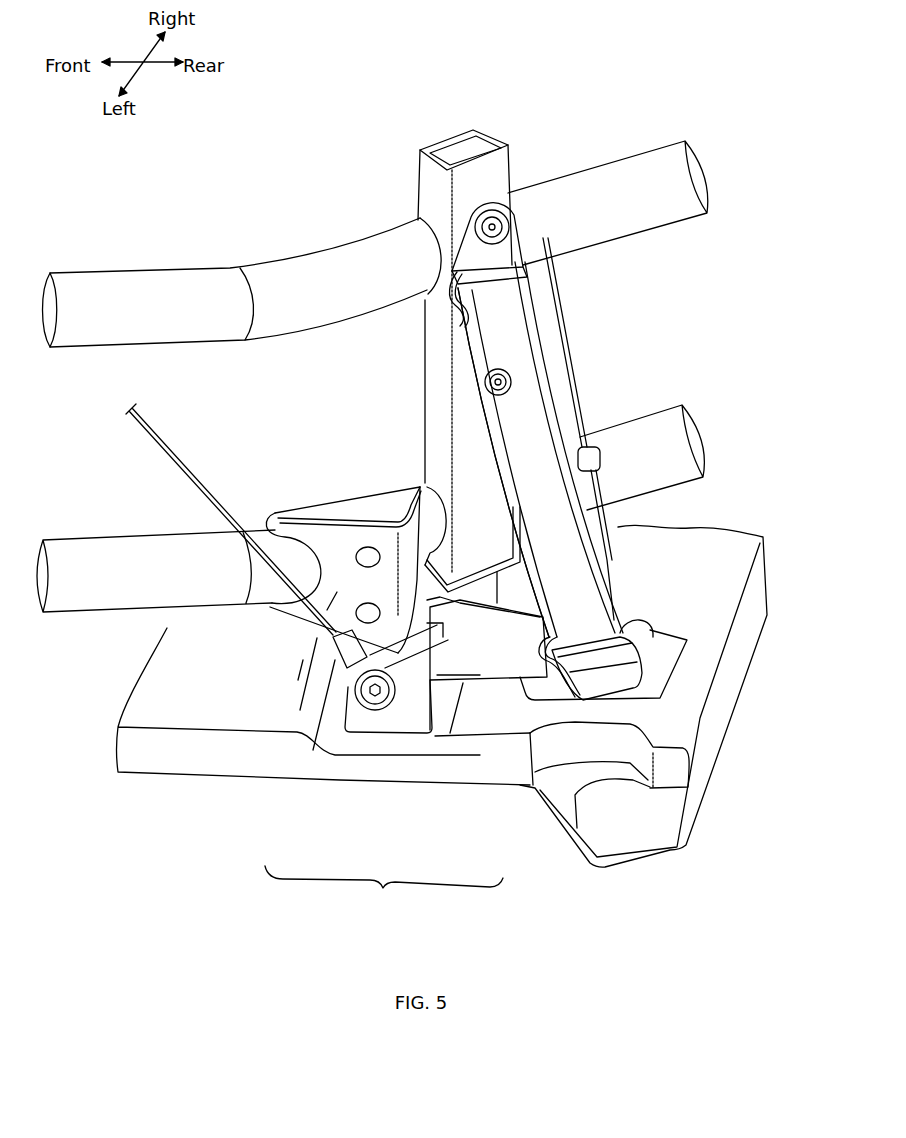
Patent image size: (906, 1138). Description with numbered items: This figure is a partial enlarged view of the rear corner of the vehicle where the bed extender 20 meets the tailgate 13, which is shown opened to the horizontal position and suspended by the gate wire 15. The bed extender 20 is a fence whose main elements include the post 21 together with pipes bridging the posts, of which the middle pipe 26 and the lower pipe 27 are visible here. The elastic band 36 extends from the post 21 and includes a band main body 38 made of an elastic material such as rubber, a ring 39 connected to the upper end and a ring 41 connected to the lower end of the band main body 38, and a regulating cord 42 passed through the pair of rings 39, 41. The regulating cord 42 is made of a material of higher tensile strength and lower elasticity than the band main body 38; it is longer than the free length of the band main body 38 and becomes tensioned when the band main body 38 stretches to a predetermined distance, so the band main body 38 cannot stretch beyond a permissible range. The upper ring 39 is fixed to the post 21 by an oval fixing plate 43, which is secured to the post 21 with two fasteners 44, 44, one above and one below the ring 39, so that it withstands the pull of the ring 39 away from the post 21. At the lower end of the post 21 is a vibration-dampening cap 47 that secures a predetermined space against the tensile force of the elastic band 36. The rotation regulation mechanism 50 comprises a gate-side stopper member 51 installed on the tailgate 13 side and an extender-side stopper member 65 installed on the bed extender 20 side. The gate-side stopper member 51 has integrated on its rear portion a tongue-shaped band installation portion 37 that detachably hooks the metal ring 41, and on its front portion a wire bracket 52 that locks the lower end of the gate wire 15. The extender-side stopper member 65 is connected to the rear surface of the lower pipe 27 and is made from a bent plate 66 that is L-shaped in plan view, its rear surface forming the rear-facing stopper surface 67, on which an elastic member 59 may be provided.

The tailgate 13 is at (710, 730).
The gate wire 15 is at (153, 447).
The bed extender 20 is at (180, 264).
The post 21 is at (437, 190).
The middle pipe 26 is at (606, 238).
The lower pipe 27 is at (650, 477).
The elastic band 36 is at (490, 445).
The band installation portion 37 is at (628, 670).
The band main body 38 is at (487, 417).
The ring 39 is at (450, 297).
The ring 41 is at (542, 645).
The regulating cord 42 is at (580, 403).
The oval fixing plate 43 is at (502, 253).
The fastener 44 is at (512, 213).
The vibration-dampening cap 47 is at (503, 593).
The rotation regulation mechanism 50 is at (384, 894).
The gate-side stopper member 51 is at (490, 700).
The wire bracket 52 is at (407, 707).
The elastic member 59 is at (450, 733).
The extender-side stopper member 65 is at (313, 630).
The bent plate 66 is at (342, 513).
The rear-facing stopper surface 67 is at (407, 497).